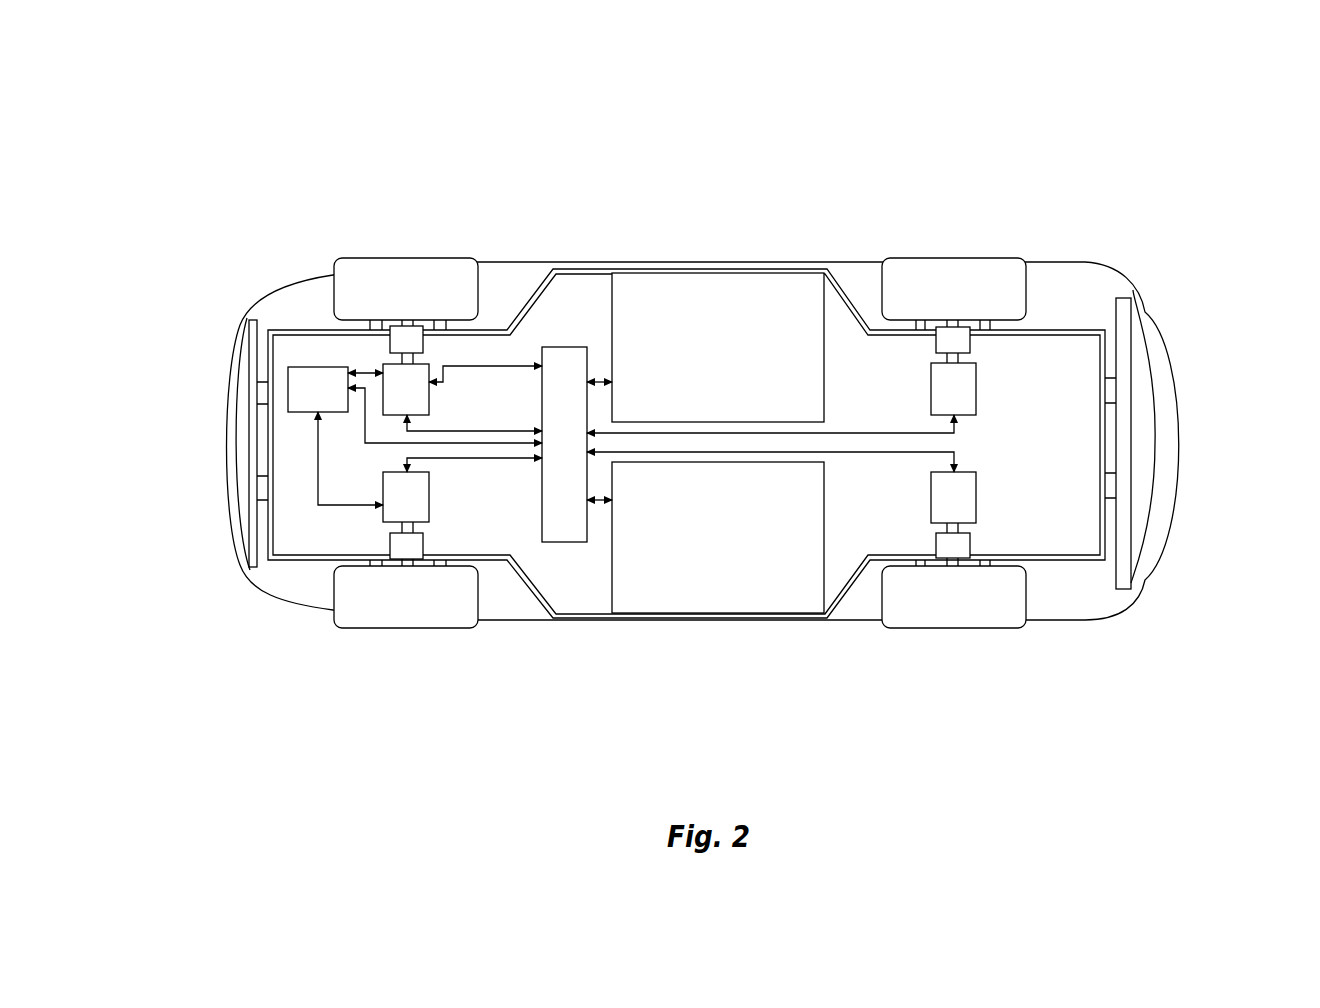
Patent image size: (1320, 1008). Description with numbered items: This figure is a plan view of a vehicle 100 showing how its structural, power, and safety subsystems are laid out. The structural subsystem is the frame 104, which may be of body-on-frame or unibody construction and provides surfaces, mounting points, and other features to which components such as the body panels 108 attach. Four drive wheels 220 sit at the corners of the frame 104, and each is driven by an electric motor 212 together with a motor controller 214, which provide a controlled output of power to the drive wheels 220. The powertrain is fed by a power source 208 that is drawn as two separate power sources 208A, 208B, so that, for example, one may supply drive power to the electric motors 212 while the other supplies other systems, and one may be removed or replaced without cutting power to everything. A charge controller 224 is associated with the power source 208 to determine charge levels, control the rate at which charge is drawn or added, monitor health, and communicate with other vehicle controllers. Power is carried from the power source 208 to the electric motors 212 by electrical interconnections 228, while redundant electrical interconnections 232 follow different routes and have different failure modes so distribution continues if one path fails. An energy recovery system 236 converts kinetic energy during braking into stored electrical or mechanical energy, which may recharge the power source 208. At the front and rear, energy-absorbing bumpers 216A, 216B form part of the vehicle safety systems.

The vehicle 100 is at (1122, 177).
The frame 104 is at (1051, 557).
The body panels 108 is at (282, 598).
The power source 208 is at (735, 259).
The power source 208A is at (762, 303).
The power source 208B is at (678, 563).
The electric motor 212 is at (398, 377).
The motor controller 214 is at (407, 548).
The bumper 216A is at (240, 448).
The bumper 216B is at (1135, 435).
The drive wheel 220 is at (412, 262).
The charge controller 224 is at (565, 346).
The electrical interconnections 228 is at (440, 430).
The redundant electrical interconnections 232 is at (503, 363).
The energy recovery system 236 is at (310, 383).